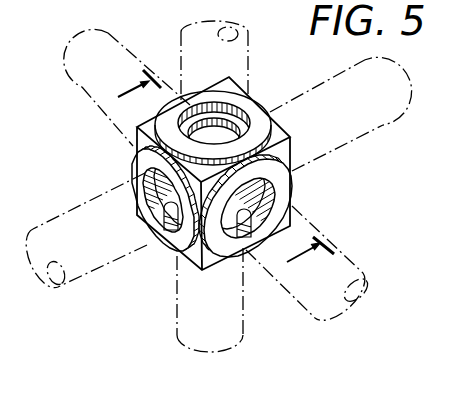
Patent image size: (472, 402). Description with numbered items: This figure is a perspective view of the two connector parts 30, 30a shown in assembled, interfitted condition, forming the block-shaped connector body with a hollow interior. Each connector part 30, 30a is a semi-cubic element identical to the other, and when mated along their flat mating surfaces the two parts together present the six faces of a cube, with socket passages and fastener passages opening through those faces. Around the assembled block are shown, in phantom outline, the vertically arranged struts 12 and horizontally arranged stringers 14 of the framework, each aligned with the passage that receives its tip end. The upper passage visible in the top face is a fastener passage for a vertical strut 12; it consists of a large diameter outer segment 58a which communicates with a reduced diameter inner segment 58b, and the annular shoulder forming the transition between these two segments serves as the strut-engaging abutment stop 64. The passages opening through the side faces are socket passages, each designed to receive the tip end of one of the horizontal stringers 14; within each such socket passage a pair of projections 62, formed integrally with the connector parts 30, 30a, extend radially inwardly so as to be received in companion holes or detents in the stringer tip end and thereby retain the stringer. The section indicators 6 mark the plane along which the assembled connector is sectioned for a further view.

The section line 6 is at (221, 172).
The strut 12 is at (180, 40).
The stringer 14 is at (380, 124).
The connector part 30 is at (291, 148).
The connector part 30a is at (282, 193).
The large diameter outer segment 58a is at (235, 105).
The reduced diameter inner segment 58b is at (222, 124).
The projection 62 is at (172, 212).
The strut-engaging abutment stop 64 is at (160, 114).